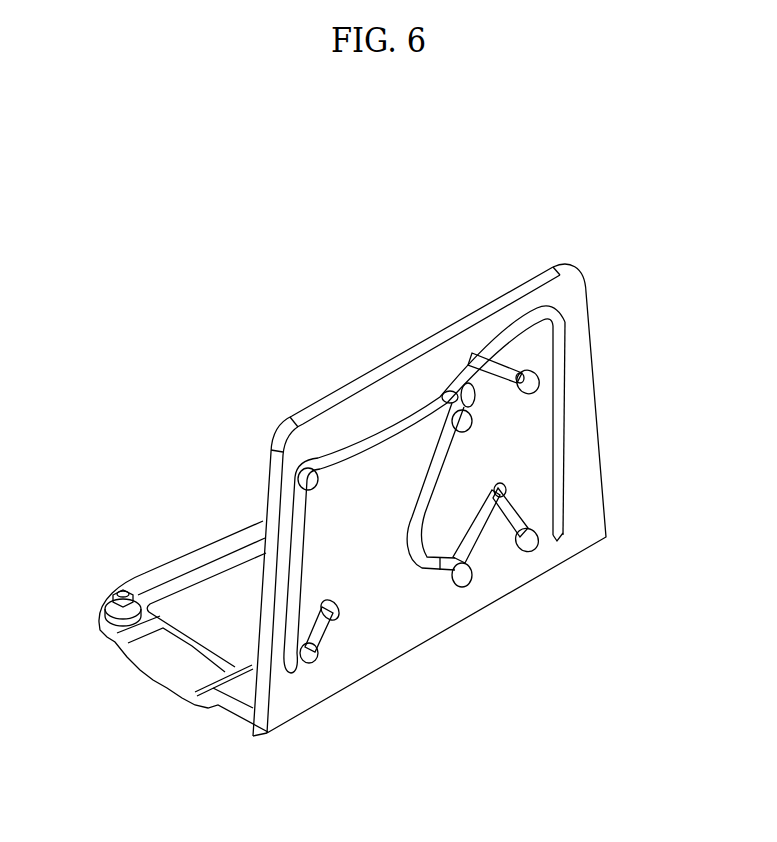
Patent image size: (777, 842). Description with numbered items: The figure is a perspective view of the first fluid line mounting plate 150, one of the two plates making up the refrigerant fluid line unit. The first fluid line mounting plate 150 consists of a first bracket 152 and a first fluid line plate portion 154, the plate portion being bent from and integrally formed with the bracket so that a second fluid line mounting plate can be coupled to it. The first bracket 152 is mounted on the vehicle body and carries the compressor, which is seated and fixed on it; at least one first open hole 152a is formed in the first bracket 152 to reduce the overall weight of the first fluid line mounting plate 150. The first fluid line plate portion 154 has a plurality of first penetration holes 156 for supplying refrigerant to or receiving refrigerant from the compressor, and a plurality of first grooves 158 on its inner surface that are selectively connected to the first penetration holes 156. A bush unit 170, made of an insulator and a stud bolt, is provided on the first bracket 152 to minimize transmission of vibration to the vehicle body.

The first fluid line mounting plate 150 is at (328, 293).
The first bracket 152 is at (181, 678).
The first open hole 152a is at (212, 603).
The first fluid line plate portion 154 is at (274, 500).
The first penetration holes 156 is at (462, 414).
The first grooves 158 is at (484, 540).
The bush unit 170 is at (103, 652).